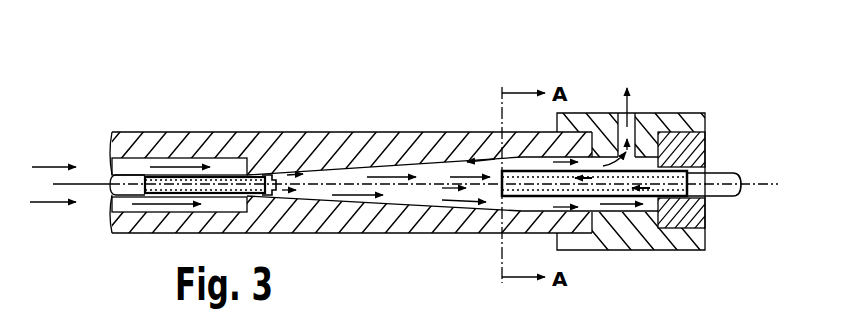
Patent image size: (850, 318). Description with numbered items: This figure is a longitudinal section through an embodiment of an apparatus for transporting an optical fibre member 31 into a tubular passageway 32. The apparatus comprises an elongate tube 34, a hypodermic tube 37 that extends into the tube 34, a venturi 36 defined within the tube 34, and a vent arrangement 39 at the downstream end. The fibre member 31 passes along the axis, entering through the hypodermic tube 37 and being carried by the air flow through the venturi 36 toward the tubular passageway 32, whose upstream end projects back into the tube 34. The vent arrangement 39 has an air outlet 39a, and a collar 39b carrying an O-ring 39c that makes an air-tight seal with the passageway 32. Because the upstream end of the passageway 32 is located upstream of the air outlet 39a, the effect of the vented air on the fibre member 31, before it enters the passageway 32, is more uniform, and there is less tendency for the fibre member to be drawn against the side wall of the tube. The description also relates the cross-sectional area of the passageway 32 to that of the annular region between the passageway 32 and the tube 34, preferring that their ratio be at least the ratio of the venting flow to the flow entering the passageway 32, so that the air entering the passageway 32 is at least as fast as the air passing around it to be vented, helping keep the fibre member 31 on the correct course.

The optical fibre member 31 is at (778, 184).
The tubular passageway 32 is at (718, 197).
The elongate tube 34 is at (427, 222).
The venturi 36 is at (262, 196).
The hypodermic tube 37 is at (155, 194).
The vent arrangement 39 is at (685, 108).
The air outlet 39a is at (632, 116).
The collar 39b is at (705, 135).
The O-ring 39c is at (705, 155).